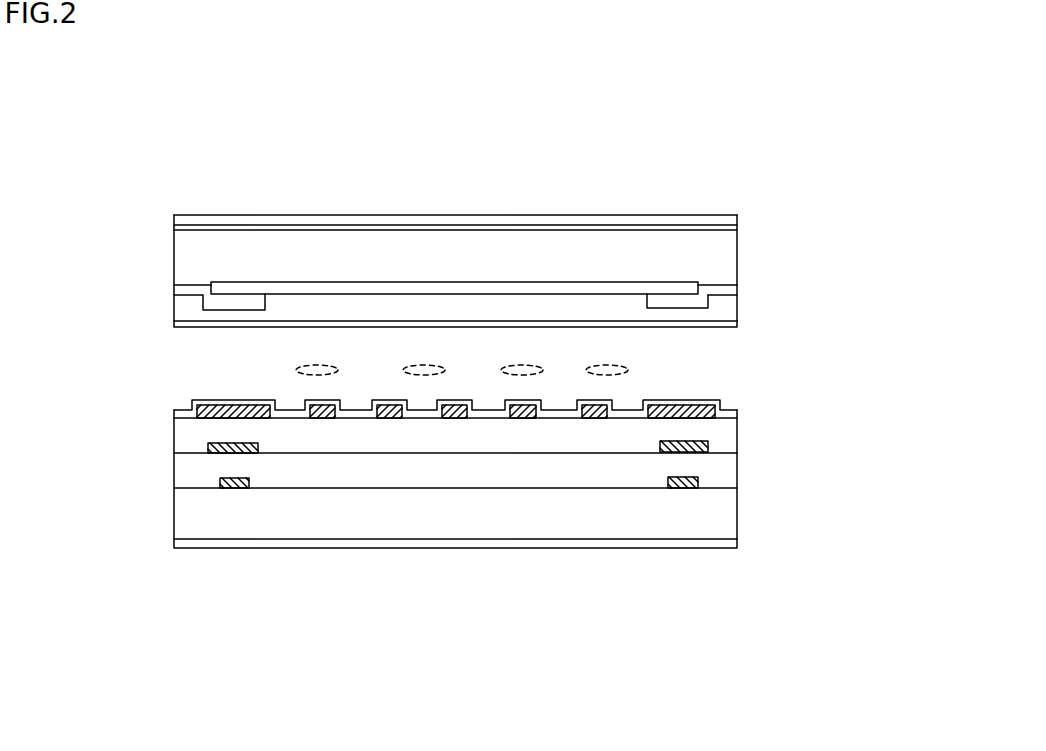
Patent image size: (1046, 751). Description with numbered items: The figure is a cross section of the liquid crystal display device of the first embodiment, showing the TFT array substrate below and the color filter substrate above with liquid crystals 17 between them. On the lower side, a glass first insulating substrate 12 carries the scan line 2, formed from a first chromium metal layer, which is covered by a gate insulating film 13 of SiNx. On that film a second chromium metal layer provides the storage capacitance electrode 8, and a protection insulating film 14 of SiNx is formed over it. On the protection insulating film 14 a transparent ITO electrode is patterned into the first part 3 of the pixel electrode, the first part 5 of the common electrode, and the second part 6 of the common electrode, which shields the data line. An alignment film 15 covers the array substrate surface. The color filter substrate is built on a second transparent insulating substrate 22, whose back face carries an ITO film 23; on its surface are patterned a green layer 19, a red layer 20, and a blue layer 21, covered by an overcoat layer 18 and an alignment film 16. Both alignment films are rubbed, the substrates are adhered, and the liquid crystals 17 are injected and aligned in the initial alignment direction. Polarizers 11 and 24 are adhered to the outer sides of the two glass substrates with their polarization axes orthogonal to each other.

The scan line 2 is at (227, 489).
The first part of the pixel electrode 3 is at (312, 405).
The first part of the common electrode 5 is at (388, 408).
The second part of the common electrode 6 is at (232, 412).
The storage capacitance electrode 8 is at (213, 455).
The polarizer 11 is at (490, 548).
The first insulating substrate 12 is at (692, 518).
The gate insulating film 13 is at (722, 476).
The protection insulating film 14 is at (720, 435).
The alignment film 15 is at (190, 410).
The alignment film 16 is at (198, 327).
The liquid crystals 17 is at (620, 367).
The overcoat layer 18 is at (728, 308).
The green layer 19 is at (367, 290).
The red layer 20 is at (190, 289).
The blue layer 21 is at (720, 285).
The second transparent insulating substrate 22 is at (462, 253).
The ITO film 23 is at (617, 224).
The polarizer 24 is at (553, 217).